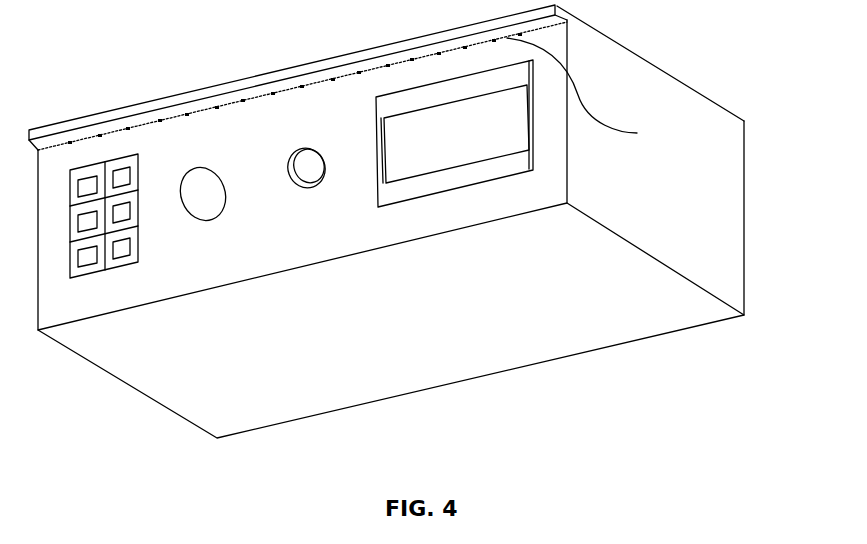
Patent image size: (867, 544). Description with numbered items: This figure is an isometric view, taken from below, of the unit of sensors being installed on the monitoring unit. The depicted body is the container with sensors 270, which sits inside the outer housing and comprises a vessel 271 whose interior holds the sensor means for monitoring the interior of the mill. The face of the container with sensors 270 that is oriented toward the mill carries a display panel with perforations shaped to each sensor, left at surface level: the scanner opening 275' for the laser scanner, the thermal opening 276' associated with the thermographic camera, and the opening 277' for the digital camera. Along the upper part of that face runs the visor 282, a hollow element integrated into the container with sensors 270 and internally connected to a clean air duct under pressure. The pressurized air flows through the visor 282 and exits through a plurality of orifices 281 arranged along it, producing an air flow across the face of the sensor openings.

The container with sensors 270 is at (89, 58).
The vessel 271 is at (653, 70).
The scanner opening 275' is at (454, 133).
The thermal opening 276' is at (317, 193).
The opening 277' is at (209, 225).
The orifices 281 is at (602, 96).
The visor 282 is at (323, 68).